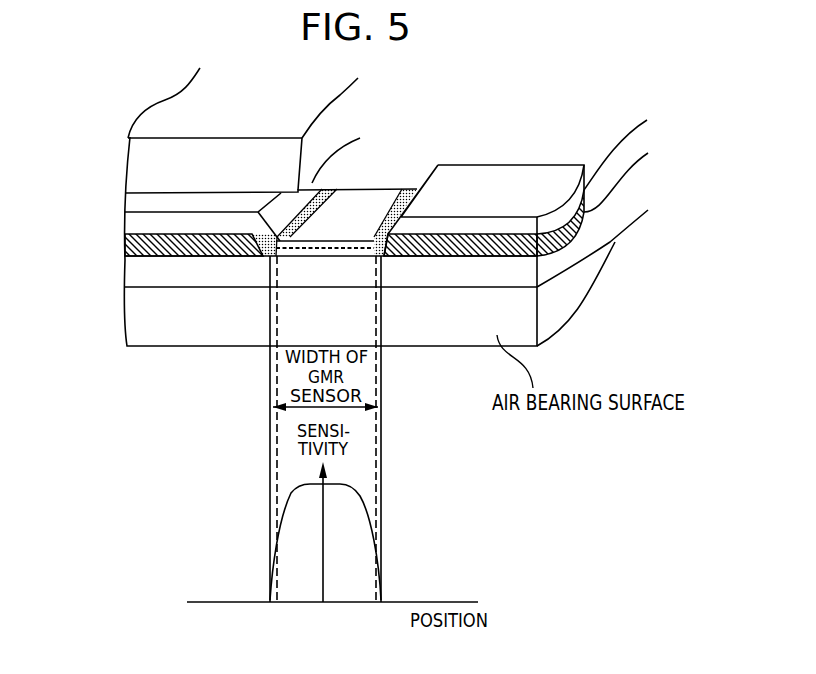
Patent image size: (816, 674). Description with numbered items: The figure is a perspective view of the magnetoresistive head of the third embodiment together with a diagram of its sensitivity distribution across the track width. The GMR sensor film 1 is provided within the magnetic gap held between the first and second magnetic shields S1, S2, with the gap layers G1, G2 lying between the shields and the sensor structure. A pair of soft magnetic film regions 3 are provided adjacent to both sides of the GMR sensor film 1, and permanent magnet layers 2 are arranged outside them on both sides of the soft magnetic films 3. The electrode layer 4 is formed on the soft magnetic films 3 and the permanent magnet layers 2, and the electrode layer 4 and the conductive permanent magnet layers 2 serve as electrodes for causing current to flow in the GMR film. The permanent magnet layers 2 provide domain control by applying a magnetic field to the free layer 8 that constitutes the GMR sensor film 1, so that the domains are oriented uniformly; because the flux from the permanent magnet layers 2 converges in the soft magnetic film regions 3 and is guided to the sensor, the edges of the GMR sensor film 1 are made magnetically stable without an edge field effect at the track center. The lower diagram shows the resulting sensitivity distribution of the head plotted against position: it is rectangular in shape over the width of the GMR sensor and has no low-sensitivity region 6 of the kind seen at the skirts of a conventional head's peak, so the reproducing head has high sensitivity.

The GMR sensor film 1 is at (365, 202).
The permanent magnet layer 2 is at (208, 256).
The soft magnetic film region 3 is at (263, 257).
The electrode layer 4 is at (243, 212).
The low-sensitivity region 6 is at (313, 185).
The free layer 8 is at (298, 247).
The first magnetic shield S1 is at (137, 315).
The second magnetic shield S2 is at (137, 163).
The lower gap layer G1 is at (137, 271).
The upper gap layer G2 is at (137, 198).